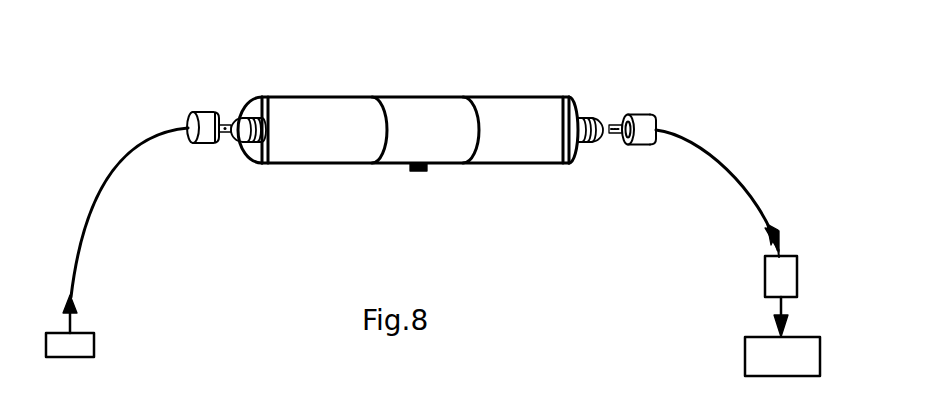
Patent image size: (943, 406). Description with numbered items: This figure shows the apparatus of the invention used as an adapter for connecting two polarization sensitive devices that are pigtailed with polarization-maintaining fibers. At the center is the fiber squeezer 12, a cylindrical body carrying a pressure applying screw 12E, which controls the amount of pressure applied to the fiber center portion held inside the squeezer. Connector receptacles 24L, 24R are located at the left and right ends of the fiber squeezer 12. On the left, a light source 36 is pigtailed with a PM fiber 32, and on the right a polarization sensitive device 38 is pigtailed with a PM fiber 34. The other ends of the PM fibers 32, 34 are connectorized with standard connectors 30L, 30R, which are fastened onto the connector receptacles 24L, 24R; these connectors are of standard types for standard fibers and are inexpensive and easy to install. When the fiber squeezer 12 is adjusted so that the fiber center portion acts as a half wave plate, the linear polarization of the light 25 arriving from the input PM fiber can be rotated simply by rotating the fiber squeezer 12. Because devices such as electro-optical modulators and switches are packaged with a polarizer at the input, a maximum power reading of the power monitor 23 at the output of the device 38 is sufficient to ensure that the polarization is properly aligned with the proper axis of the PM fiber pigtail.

The fiber squeezer 12 is at (400, 102).
The pressure applying screw 12E is at (430, 172).
The connector receptacle 24L is at (246, 162).
The connector receptacle 24R is at (592, 150).
The standard connector 30L is at (198, 112).
The standard connector 30R is at (639, 111).
The PM fiber 32 is at (97, 203).
The PM fiber 34 is at (750, 168).
The light 25 is at (82, 305).
The light source 36 is at (98, 345).
The polarization sensitive device 38 is at (758, 274).
The power monitor 23 is at (738, 357).